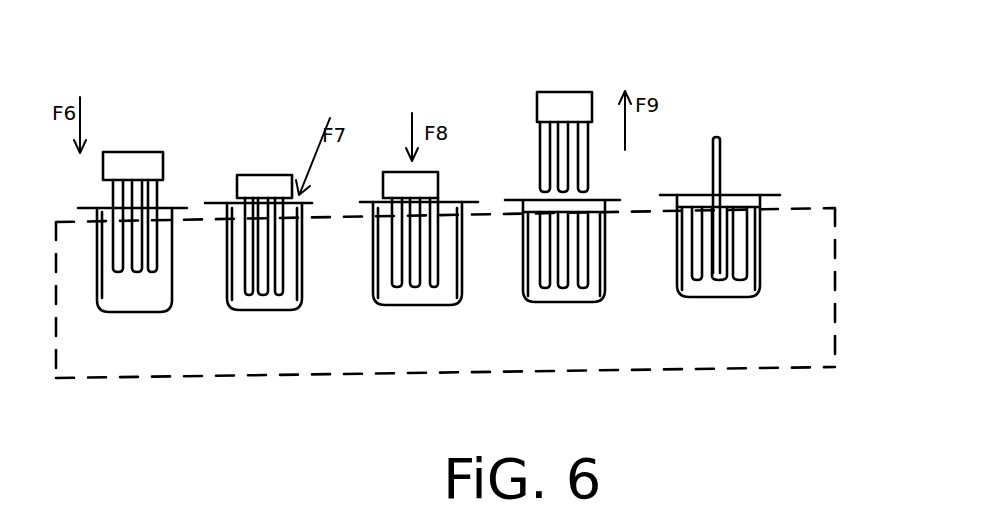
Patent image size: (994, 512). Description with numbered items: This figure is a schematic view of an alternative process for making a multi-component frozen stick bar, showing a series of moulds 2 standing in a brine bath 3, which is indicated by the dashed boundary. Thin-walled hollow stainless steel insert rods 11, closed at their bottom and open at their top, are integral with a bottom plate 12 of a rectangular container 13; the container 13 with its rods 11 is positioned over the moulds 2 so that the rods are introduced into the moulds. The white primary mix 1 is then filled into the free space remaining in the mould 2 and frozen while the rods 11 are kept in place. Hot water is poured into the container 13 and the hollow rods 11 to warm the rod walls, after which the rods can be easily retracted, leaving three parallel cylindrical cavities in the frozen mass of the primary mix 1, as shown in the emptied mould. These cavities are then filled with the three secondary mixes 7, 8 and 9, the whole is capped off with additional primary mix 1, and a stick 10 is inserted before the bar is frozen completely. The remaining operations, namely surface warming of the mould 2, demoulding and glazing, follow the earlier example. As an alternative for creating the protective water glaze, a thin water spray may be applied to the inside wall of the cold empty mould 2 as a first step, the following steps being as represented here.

The primary white mix 1 is at (233, 240).
The mould 2 is at (97, 303).
The brine bath 3 is at (172, 350).
The secondary mix 7 is at (693, 233).
The secondary mix 8 is at (723, 247).
The secondary mix 9 is at (740, 260).
The stick 10 is at (722, 145).
The hollow insert rods 11 is at (118, 195).
The bottom plate 12 is at (162, 181).
The rectangular container 13 is at (138, 152).